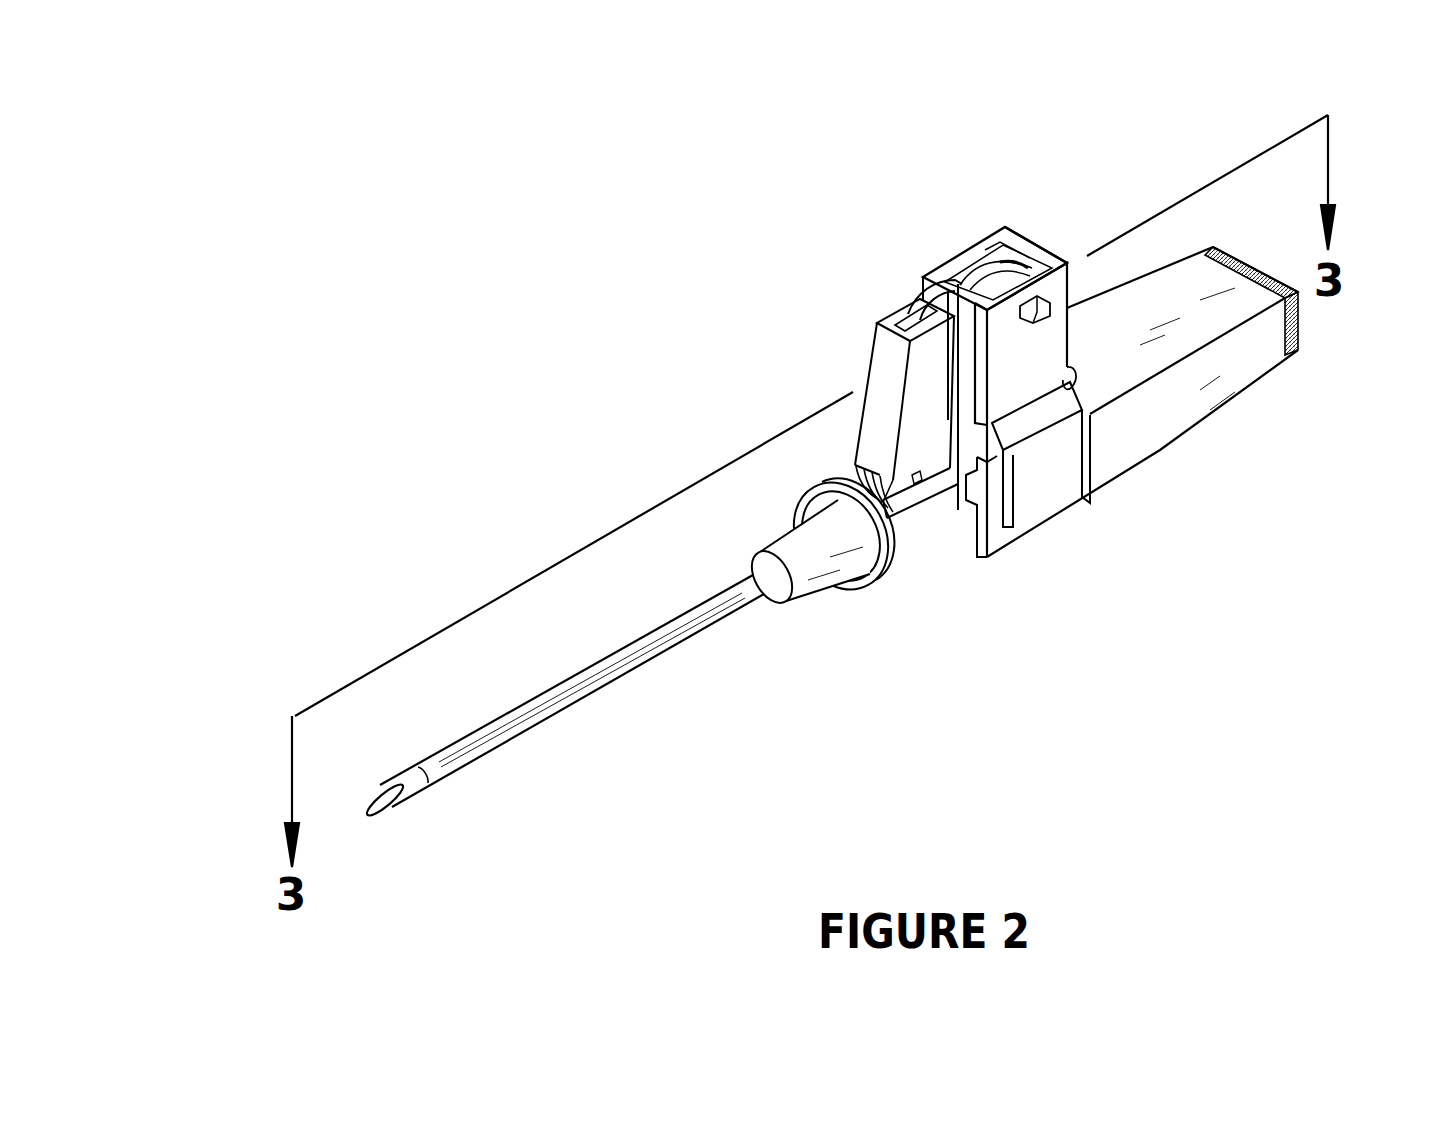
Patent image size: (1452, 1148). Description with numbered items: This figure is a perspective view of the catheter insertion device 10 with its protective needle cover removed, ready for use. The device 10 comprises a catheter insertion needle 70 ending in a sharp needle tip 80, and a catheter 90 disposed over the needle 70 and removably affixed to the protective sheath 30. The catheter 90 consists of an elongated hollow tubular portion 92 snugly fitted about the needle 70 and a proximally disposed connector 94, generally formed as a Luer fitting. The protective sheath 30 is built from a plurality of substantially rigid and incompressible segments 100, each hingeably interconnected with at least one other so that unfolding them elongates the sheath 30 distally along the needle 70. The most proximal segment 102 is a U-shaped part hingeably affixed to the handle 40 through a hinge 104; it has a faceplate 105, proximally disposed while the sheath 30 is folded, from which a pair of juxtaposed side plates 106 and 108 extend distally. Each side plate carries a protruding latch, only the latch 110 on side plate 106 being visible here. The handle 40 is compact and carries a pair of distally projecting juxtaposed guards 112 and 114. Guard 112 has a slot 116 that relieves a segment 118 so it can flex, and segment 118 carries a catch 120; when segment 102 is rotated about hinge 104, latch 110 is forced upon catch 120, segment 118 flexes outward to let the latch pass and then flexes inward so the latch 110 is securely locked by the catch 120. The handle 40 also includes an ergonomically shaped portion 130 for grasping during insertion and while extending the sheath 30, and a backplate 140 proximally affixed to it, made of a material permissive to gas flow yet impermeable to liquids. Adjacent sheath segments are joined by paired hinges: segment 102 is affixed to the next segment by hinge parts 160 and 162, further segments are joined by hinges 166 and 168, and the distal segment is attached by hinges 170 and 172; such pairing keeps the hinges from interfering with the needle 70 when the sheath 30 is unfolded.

The device 10 is at (718, 278).
The protective sheath 30 is at (1045, 232).
The handle 40 is at (1195, 452).
The catheter insertion needle 70 is at (410, 797).
The sharp needle tip 80 is at (368, 814).
The catheter 90 is at (610, 642).
The elongated hollow tubular portion 92 is at (560, 703).
The connector 94 is at (862, 582).
The segment 100 is at (913, 252).
The most proximal segment 102 is at (1165, 262).
The hinge 104 is at (1153, 448).
The faceplate 105 is at (1082, 318).
The side plate 106 is at (1120, 322).
The side plate 108 is at (1003, 215).
The protruding latch 110 is at (1088, 278).
The guard 112 is at (1060, 510).
The guard 114 is at (930, 565).
The slot 116 is at (1016, 530).
The segment 118 is at (977, 550).
The catch 120 is at (1010, 543).
The portion 130 is at (1258, 368).
The backplate 140 is at (1303, 322).
The hinge part 160 is at (1055, 262).
The hinge part 162 is at (1036, 215).
The hinge 166 is at (885, 325).
The hinge 168 is at (910, 302).
The hinge 170 is at (845, 430).
The hinge 172 is at (858, 482).